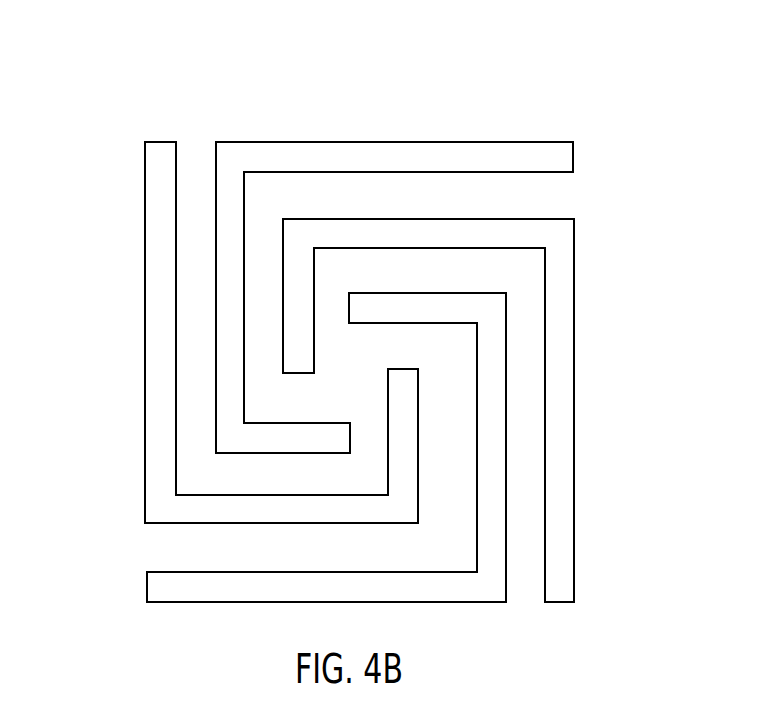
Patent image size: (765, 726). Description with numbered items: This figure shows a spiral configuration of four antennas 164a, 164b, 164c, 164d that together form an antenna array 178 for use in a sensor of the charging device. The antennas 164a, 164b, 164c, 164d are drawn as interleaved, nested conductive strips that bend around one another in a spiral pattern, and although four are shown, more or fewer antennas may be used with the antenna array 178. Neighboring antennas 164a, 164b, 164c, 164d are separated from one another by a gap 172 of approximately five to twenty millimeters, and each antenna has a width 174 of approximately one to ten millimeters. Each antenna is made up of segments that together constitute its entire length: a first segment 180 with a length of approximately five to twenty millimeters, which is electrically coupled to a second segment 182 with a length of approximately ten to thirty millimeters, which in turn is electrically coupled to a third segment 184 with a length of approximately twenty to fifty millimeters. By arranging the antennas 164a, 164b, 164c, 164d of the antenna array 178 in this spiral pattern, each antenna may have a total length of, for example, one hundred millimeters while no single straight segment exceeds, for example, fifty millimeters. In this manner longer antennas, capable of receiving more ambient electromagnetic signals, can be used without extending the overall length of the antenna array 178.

The antenna array 178 is at (466, 106).
The antenna 164a is at (145, 178).
The antenna 164b is at (375, 142).
The antenna 164c is at (575, 575).
The antenna 164d is at (360, 602).
The gap 172 is at (555, 195).
The width 174 is at (147, 587).
The first segment 180 is at (283, 323).
The second segment 182 is at (323, 218).
The third segment 184 is at (575, 400).